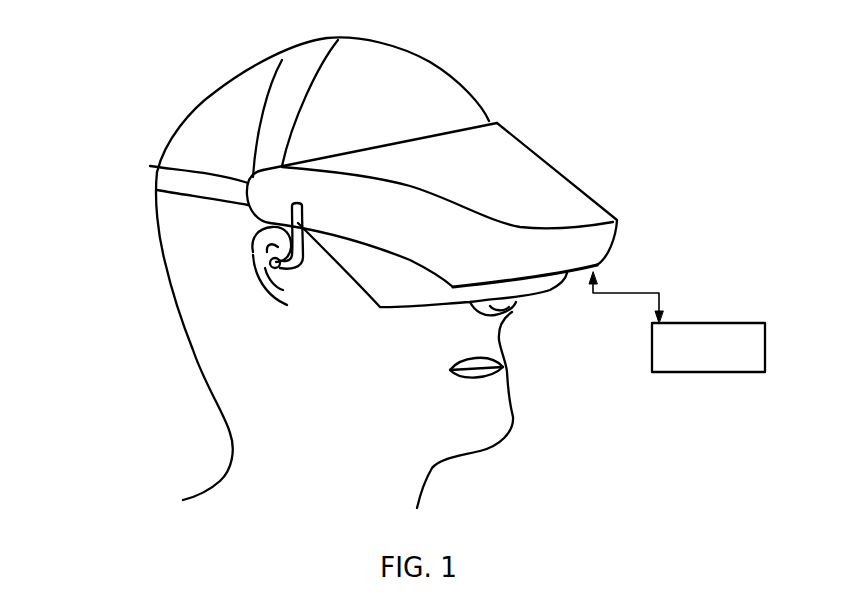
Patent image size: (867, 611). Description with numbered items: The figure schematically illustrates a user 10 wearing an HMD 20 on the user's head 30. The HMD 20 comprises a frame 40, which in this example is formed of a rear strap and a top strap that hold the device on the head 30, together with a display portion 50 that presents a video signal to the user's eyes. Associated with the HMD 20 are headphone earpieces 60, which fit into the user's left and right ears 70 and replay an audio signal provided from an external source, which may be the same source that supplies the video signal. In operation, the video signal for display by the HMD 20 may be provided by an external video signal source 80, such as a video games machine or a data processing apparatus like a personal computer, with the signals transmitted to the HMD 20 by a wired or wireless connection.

The user 10 is at (136, 353).
The HMD 20 is at (564, 162).
The user's head 30 is at (164, 248).
The frame 40 is at (158, 172).
The display portion 50 is at (598, 201).
The headphone earpieces 60 is at (298, 272).
The ears 70 is at (253, 249).
The external video signal source 80 is at (740, 322).